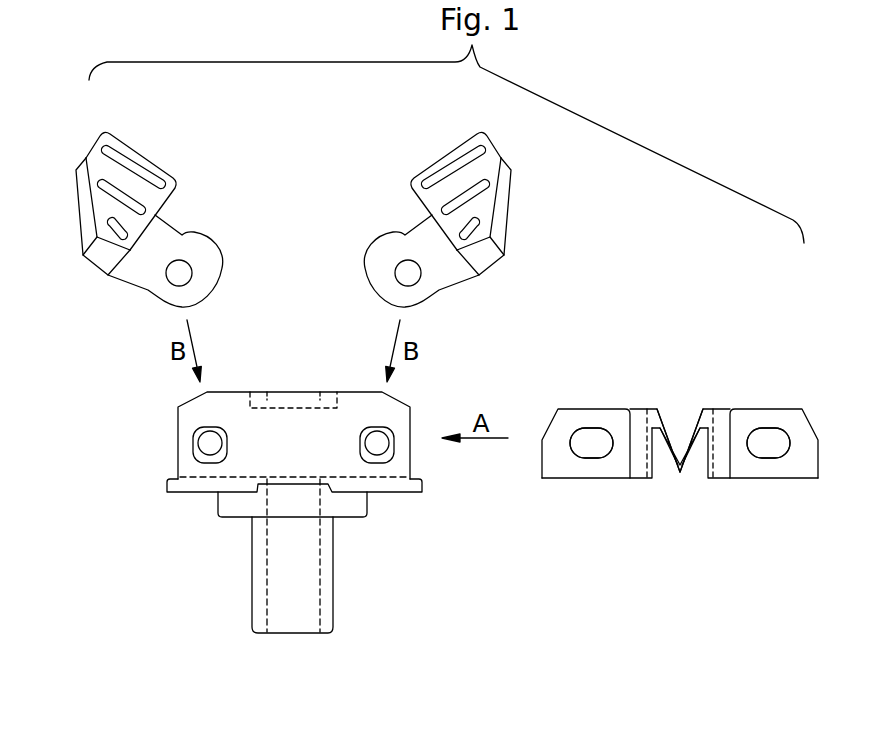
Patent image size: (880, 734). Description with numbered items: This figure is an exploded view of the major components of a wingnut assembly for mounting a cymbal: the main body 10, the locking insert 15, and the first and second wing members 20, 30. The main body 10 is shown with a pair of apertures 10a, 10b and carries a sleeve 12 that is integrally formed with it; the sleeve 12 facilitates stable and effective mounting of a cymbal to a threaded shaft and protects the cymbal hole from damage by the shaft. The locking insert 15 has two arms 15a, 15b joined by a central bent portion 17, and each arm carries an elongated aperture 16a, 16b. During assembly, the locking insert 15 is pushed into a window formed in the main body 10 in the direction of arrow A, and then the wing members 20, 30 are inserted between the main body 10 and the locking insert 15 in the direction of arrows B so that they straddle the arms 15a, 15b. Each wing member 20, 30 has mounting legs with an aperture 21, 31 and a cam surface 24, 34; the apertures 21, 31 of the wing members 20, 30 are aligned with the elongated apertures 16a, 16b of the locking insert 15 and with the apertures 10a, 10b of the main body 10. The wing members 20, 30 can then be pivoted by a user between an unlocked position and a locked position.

The main body 10 is at (302, 451).
The aperture of main body 10a is at (203, 445).
The aperture of main body 10b is at (384, 445).
The sleeve 12 is at (333, 572).
The locking insert 15 is at (680, 439).
The arm of locking insert 15a is at (609, 414).
The arm of locking insert 15b is at (751, 414).
The elongated aperture of locking insert 16a is at (592, 444).
The elongated aperture of locking insert 16b is at (768, 444).
The V-shaped spring portion 17 is at (680, 471).
The first wing member 20 is at (148, 160).
The aperture of first wing member 21 is at (183, 272).
The cam surface 24 is at (197, 233).
The second wing member 30 is at (447, 162).
The aperture of second wing member 31 is at (404, 272).
The cam surface 34 is at (390, 233).